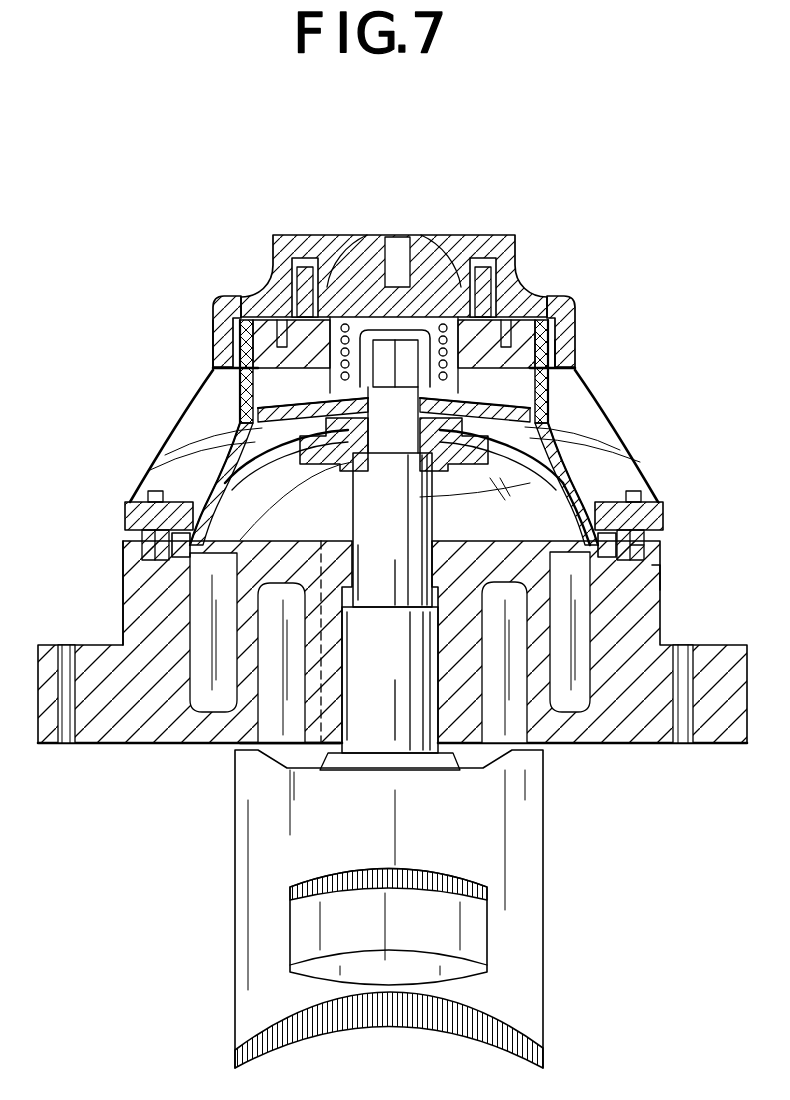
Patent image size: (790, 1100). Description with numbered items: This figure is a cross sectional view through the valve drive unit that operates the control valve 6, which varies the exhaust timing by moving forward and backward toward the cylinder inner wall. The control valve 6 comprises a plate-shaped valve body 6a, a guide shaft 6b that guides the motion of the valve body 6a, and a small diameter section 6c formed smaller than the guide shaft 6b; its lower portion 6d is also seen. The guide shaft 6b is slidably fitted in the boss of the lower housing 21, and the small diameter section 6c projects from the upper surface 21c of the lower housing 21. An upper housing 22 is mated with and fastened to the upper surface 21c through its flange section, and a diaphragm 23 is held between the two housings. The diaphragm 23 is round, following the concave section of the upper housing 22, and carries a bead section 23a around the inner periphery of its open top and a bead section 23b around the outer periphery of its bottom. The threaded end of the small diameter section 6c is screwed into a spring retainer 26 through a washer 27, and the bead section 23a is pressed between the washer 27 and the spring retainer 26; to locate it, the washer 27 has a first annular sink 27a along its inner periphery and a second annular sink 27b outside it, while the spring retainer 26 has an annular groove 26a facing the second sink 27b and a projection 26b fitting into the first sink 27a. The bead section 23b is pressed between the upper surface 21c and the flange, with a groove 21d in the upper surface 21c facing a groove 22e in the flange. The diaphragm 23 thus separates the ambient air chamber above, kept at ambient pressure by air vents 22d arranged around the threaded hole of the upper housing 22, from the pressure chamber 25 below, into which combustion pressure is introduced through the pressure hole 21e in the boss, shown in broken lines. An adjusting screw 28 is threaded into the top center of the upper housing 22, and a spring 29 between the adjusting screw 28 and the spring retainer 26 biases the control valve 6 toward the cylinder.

The control valve 6 is at (556, 862).
The valve body 6a is at (518, 988).
The guide shaft 6b is at (422, 712).
The small diameter section 6c is at (535, 482).
The engaging portion 6d is at (472, 928).
The lower housing 21 is at (157, 618).
The upper surface 21c is at (143, 572).
The groove 21d is at (640, 575).
The pressure hole 21e is at (255, 752).
The upper housing 22 is at (160, 468).
The air vents 22d is at (260, 330).
The groove 22e is at (640, 532).
The diaphragm 23 is at (548, 457).
The bead section 23a is at (576, 352).
The bead section 23b is at (614, 563).
The pressure chamber 25 is at (560, 515).
The spring retainer 26 is at (575, 310).
The annular groove 26a is at (240, 385).
The projection 26b is at (213, 353).
The washer 27 is at (540, 427).
The first annular sink 27a is at (240, 445).
The second annular sink 27b is at (243, 413).
The adjusting screw 28 is at (353, 287).
The spring 29 is at (436, 318).